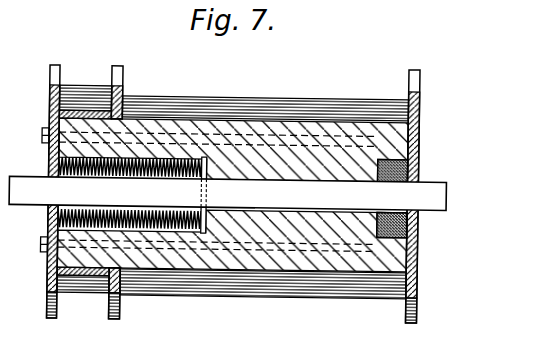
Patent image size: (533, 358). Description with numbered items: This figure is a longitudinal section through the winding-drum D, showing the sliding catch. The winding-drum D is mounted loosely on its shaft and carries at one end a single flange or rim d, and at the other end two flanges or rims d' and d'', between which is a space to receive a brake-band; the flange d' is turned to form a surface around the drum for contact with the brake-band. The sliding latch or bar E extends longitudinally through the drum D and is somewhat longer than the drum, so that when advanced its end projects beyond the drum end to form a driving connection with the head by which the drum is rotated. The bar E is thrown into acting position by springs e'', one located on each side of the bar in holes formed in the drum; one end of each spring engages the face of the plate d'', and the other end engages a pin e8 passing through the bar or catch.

The winding-drum D is at (178, 99).
The flange or rim d'' is at (66, 180).
The flange or rim d' is at (128, 186).
The flange or rim d is at (415, 185).
The sliding latch or bar E is at (227, 194).
The pin e8 is at (209, 184).
The springs e'' is at (112, 194).